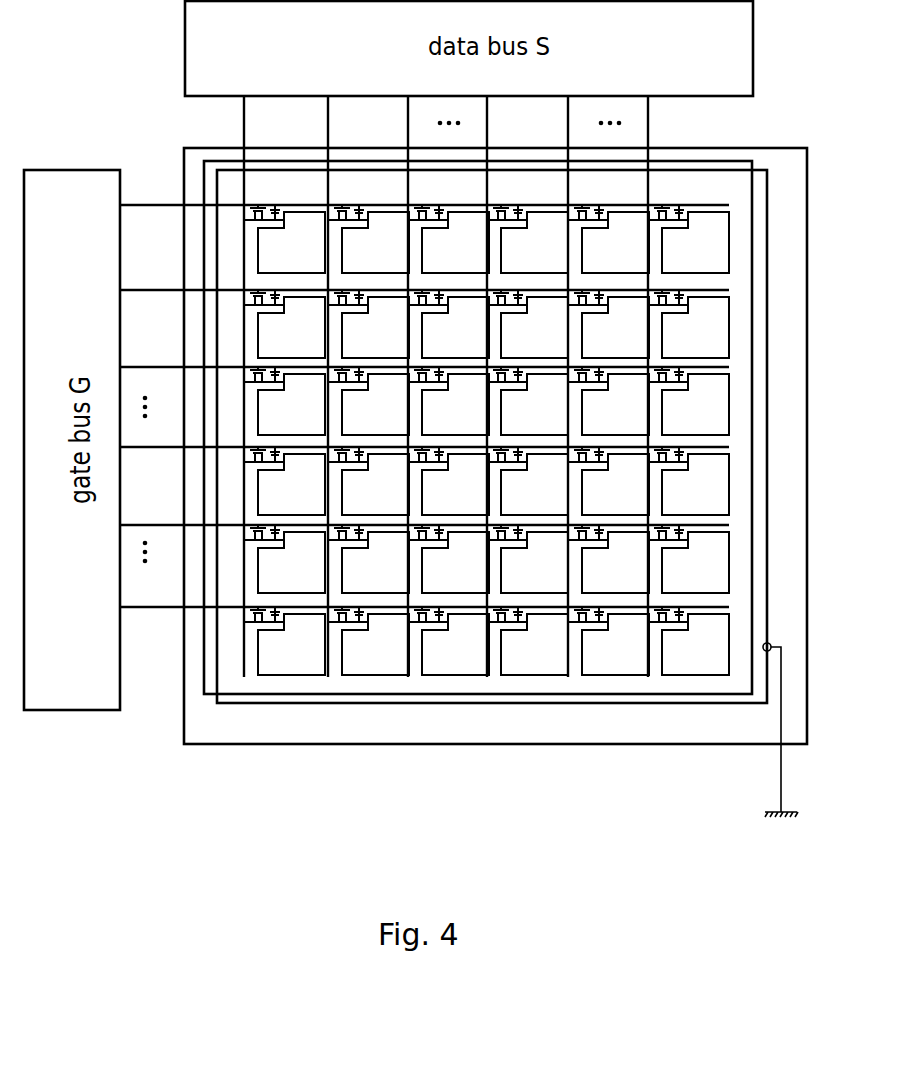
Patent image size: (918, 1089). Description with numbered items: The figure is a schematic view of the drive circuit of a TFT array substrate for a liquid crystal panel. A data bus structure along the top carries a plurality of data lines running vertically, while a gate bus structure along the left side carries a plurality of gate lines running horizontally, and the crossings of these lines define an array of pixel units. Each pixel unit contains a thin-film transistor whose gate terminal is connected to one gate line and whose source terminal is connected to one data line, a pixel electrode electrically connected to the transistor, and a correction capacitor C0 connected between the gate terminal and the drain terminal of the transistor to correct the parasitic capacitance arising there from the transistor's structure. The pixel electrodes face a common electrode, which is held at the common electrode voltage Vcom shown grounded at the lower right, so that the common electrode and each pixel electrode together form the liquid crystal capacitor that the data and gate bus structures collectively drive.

The correction capacitor C0 is at (517, 612).
The common electrode voltage Vcom is at (744, 730).